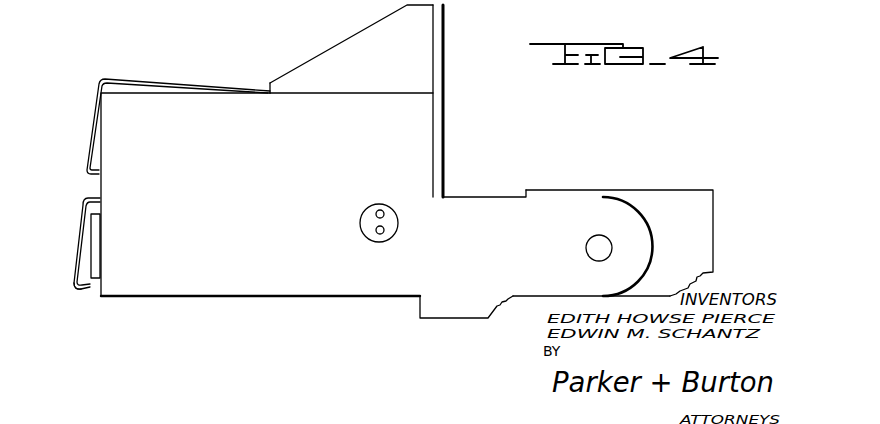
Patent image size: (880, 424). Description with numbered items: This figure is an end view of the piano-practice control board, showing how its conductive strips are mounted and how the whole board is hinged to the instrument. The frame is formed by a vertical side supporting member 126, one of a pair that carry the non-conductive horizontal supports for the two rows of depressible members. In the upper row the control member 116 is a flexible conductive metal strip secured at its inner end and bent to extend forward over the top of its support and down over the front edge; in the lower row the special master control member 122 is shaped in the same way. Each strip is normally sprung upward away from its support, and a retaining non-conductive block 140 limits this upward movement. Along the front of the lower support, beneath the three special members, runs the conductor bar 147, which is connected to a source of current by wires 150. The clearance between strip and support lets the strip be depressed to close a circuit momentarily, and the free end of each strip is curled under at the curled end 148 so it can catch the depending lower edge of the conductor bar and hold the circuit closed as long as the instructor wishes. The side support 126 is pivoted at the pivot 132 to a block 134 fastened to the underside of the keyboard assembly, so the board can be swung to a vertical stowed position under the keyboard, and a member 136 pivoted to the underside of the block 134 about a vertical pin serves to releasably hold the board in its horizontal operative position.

The control member 116 is at (97, 101).
The special master control member 122 is at (82, 212).
The vertical side supporting member 126 is at (148, 288).
The pivot 132 is at (594, 248).
The block 134 is at (703, 223).
The member 136 is at (460, 311).
The retaining non-conductive block 140 is at (312, 70).
The conductor bar 147 is at (93, 251).
The curled end 148 is at (73, 289).
The wires 150 is at (377, 227).